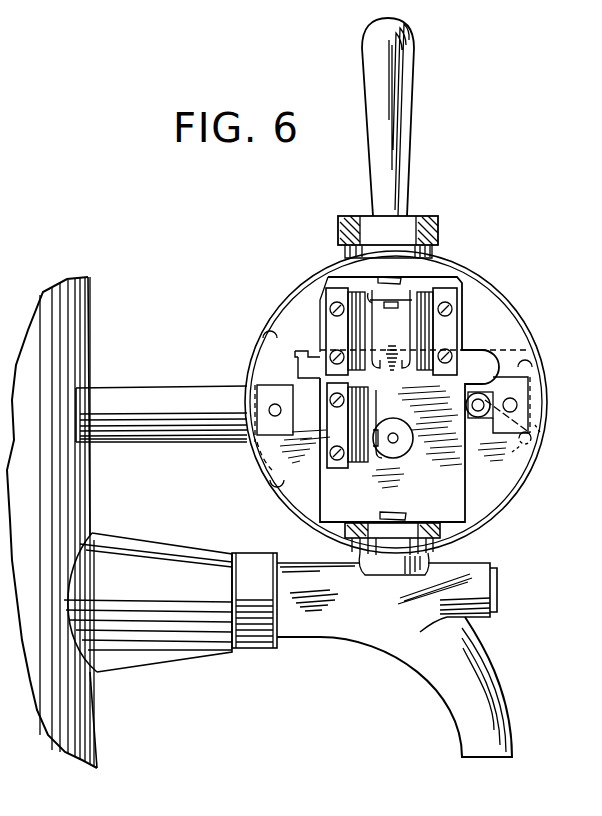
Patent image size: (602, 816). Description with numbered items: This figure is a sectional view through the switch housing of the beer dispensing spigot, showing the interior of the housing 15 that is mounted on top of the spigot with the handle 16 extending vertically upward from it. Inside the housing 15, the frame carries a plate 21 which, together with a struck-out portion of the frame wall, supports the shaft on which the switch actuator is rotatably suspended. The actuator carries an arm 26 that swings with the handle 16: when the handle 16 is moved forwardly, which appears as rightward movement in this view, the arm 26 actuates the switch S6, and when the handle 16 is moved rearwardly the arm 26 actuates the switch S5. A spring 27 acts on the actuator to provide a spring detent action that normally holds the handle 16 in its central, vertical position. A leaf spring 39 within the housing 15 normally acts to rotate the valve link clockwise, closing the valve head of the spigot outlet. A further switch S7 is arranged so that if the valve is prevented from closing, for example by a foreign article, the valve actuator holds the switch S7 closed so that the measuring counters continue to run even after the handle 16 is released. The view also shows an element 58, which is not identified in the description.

The housing 15 is at (514, 310).
The handle 16 is at (402, 72).
The plate 21 is at (458, 497).
The arm 26 is at (392, 355).
The spring 27 is at (309, 352).
The leaf spring 39 is at (532, 442).
The cam 58 is at (394, 433).
The switch S5 is at (448, 300).
The switch S6 is at (327, 300).
The switch S7 is at (362, 456).